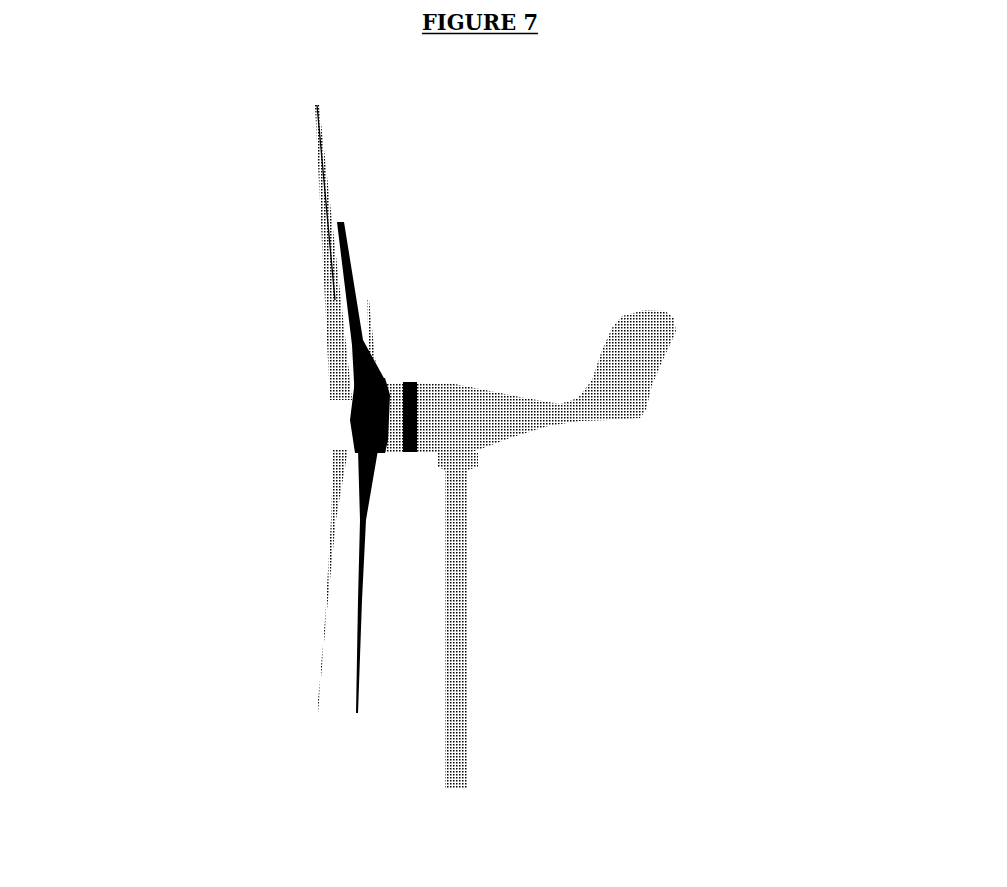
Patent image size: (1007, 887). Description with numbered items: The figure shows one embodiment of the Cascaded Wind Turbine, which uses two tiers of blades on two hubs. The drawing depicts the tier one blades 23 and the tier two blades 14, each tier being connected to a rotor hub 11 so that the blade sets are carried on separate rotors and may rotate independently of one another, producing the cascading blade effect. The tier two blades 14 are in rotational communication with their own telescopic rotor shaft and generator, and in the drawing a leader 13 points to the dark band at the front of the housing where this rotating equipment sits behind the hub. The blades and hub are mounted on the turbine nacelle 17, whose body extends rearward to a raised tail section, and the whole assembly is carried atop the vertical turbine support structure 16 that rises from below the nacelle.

The rotor hub 11 is at (321, 404).
The generator 13 is at (360, 427).
The tier 2 blades 14 is at (356, 225).
The turbine support structure 16 is at (472, 596).
The turbine nacelle 17 is at (654, 342).
The tier 1 blades 23 is at (299, 150).